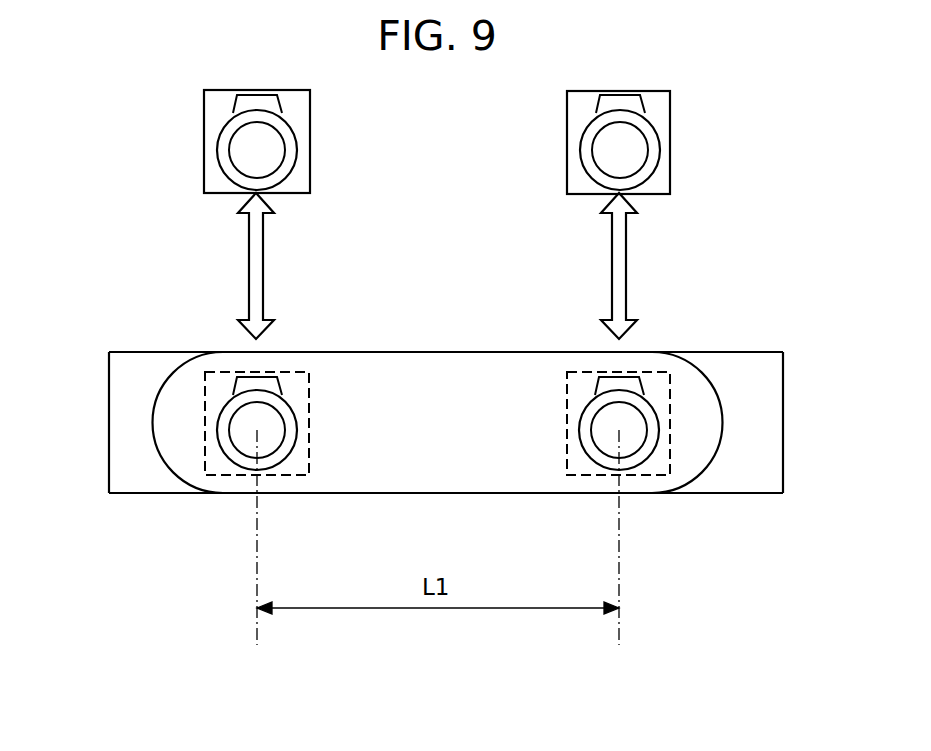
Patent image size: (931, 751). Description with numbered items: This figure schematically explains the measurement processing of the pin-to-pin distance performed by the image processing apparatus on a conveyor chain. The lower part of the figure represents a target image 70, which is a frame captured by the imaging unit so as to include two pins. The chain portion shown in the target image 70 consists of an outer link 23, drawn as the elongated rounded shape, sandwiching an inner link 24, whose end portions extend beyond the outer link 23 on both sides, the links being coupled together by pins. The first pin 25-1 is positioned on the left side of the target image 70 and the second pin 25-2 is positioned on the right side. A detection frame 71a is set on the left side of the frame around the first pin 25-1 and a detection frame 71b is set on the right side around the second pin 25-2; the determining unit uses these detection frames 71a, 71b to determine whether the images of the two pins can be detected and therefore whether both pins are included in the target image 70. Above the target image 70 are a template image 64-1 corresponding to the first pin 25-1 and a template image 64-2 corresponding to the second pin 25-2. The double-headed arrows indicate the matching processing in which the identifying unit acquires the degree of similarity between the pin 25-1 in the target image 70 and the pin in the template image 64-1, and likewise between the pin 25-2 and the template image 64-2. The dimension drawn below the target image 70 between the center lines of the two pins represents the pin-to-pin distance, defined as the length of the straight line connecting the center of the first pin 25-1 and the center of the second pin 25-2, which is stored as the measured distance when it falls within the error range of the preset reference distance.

The target image 70 is at (762, 352).
The inner link 24 is at (142, 362).
The outer link 23 is at (383, 362).
The template image 64-1 is at (311, 121).
The template image 64-2 is at (672, 122).
The first pin 25-1 is at (238, 158).
The second pin 25-2 is at (609, 157).
The detection frame 71a is at (205, 475).
The detection frame 71b is at (670, 448).